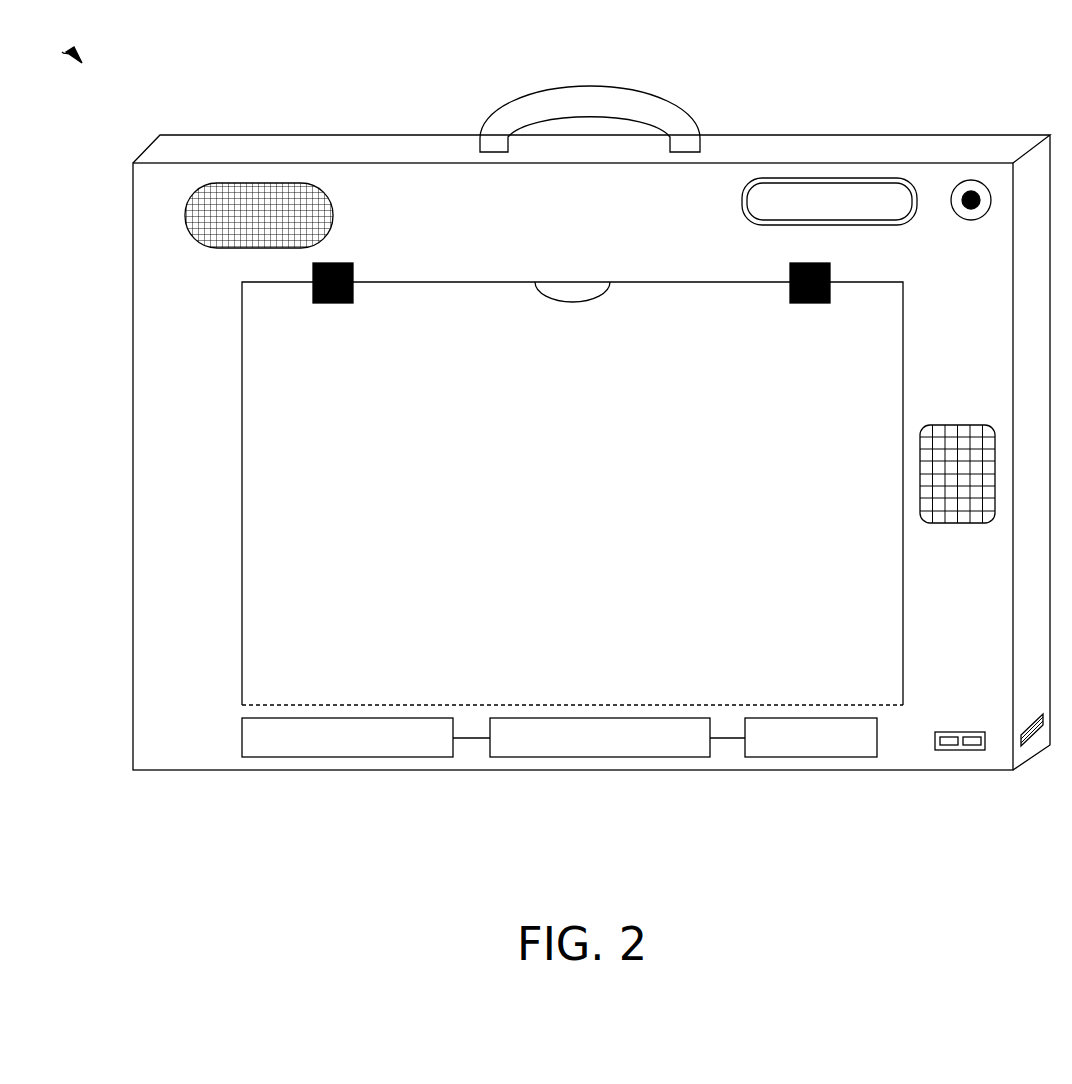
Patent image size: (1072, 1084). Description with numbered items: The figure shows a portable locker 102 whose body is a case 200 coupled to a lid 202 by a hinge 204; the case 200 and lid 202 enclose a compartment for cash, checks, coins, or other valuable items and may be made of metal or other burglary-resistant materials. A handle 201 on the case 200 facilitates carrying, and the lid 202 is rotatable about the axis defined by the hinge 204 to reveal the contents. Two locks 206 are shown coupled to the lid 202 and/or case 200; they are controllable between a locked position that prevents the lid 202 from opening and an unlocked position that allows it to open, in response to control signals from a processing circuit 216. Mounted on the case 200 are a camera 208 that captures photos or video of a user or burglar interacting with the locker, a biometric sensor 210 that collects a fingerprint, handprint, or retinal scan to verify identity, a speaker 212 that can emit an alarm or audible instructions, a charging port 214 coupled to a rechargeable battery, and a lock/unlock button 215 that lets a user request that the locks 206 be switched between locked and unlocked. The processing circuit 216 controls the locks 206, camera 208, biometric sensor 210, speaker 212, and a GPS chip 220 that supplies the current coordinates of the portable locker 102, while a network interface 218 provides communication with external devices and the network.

The portable locker 102 is at (52, 54).
The case 200 is at (985, 150).
The handle 201 is at (512, 120).
The lid 202 is at (268, 355).
The hinge 204 is at (275, 705).
The locks 206 is at (345, 264).
The camera 208 is at (971, 213).
The biometric sensor 210 is at (975, 425).
The speaker 212 is at (333, 196).
The charging port 214 is at (962, 732).
The lock/unlock button 215 is at (742, 200).
The processing circuit 216 is at (548, 757).
The network interface 218 is at (320, 757).
The GPS chip 220 is at (810, 757).